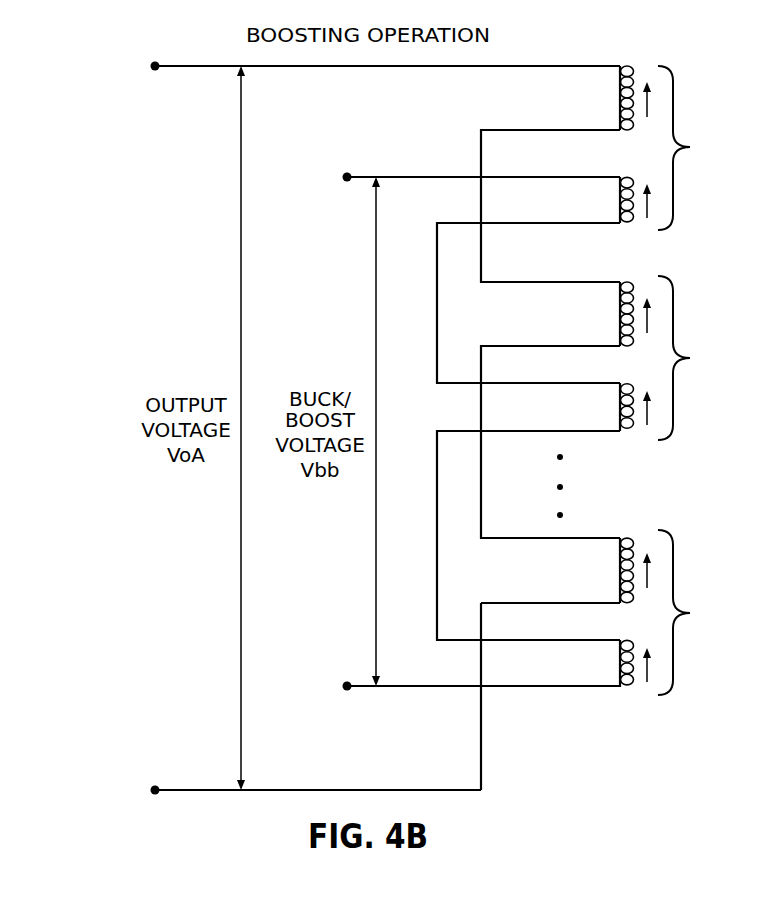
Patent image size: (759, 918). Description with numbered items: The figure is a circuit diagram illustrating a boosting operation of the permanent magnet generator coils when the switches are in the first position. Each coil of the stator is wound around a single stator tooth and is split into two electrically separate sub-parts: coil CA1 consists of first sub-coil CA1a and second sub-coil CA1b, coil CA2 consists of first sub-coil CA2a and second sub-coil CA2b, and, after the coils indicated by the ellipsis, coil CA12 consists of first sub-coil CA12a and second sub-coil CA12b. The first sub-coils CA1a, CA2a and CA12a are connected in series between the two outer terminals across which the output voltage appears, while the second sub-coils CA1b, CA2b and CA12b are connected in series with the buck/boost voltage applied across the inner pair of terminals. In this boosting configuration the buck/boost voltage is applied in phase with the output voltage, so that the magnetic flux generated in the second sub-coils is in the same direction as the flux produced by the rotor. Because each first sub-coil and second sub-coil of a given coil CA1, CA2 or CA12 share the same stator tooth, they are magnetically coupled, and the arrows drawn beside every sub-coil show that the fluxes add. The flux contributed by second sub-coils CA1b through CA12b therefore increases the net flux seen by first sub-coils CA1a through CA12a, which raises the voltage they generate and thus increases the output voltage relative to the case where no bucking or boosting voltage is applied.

The first sub-coil CA1a is at (603, 98).
The second sub-coil CA1b is at (603, 200).
The coil CA1 is at (699, 148).
The first sub-coil CA2a is at (603, 314).
The second sub-coil CA2b is at (603, 407).
The coil CA2 is at (699, 358).
The first sub-coil CA12a is at (596, 570).
The second sub-coil CA12b is at (596, 663).
The coil CA12 is at (705, 612).